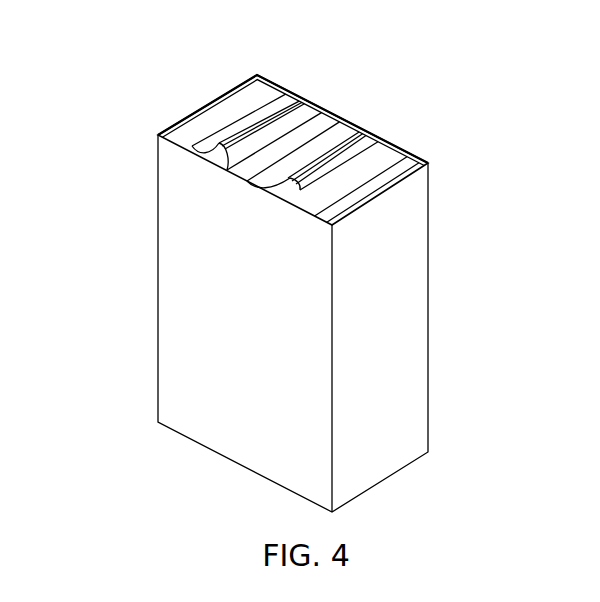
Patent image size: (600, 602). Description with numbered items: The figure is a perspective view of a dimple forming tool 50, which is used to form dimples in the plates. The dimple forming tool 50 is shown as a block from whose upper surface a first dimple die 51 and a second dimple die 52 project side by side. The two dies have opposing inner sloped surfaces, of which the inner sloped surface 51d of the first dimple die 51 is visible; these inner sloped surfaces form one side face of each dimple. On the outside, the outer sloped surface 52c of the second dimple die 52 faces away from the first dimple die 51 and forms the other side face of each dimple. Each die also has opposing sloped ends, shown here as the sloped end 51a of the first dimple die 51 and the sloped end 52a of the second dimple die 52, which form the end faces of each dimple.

The dimple forming tool 50 is at (104, 250).
The first dimple die 51 is at (280, 93).
The sloped end of first dimple die 51a is at (220, 152).
The inner sloped surface of first dimple die 51d is at (265, 138).
The second dimple die 52 is at (360, 132).
The sloped end of second dimple die 52a is at (292, 180).
The outer sloped surface of second dimple die 52c is at (366, 165).